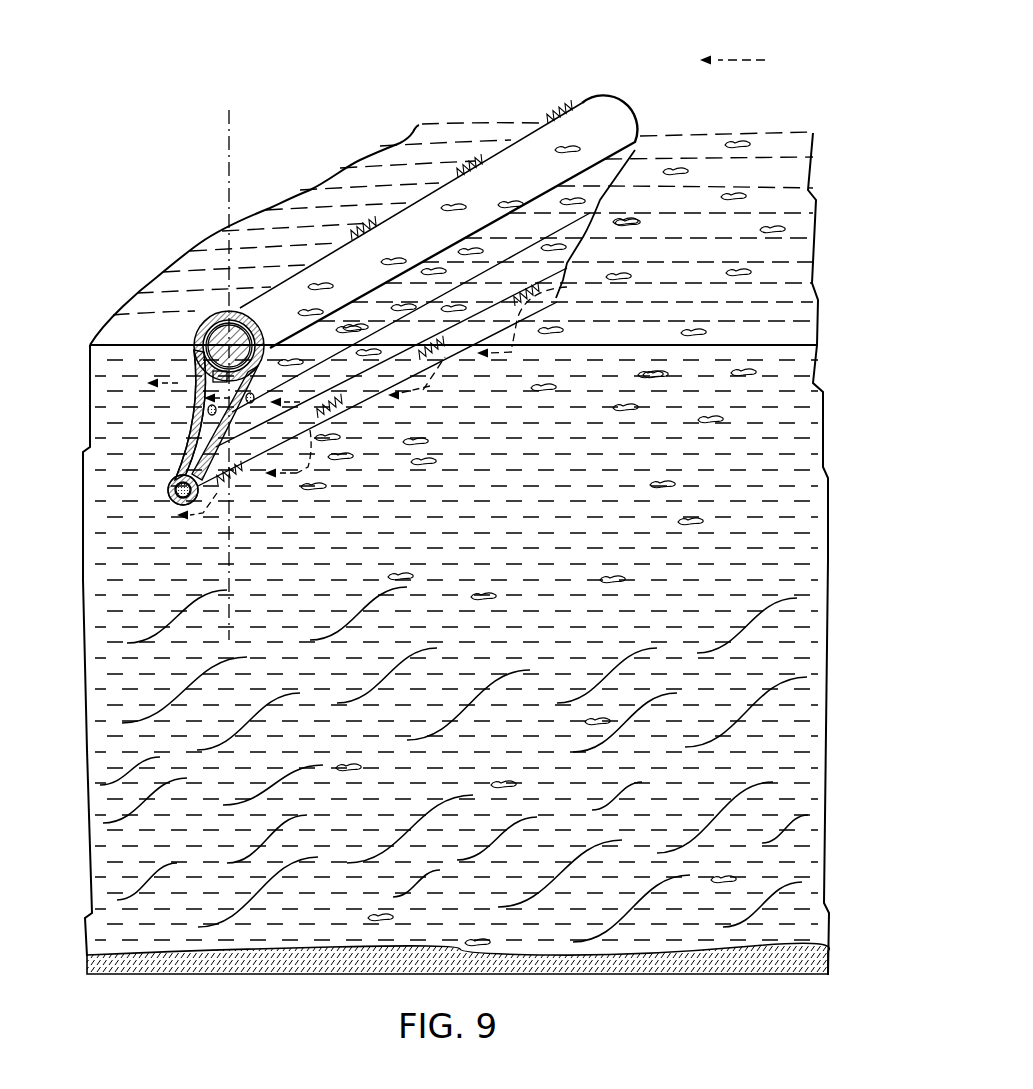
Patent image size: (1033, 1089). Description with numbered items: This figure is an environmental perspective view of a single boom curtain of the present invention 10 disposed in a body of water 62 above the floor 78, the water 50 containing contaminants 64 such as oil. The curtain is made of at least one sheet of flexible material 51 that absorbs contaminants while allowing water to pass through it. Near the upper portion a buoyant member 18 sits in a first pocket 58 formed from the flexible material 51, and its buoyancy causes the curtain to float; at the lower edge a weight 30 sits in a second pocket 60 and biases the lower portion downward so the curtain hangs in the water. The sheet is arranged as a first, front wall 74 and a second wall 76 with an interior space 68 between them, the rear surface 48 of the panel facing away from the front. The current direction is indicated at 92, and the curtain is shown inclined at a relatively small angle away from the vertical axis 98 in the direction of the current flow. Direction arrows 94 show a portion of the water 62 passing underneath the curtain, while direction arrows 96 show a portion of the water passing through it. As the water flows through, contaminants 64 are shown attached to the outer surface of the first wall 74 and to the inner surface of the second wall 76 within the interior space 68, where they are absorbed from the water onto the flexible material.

The present invention 10 is at (600, 76).
The buoyant member 18 is at (216, 320).
The weight 30 is at (168, 490).
The rear surface 48 is at (196, 398).
The water 50 is at (782, 345).
The sheet of flexible material 51 is at (222, 312).
The first pocket 58 is at (234, 312).
The second pocket 60 is at (172, 476).
The water 62 is at (792, 443).
The contaminants 64 is at (737, 143).
The interior space 68 is at (195, 358).
The first wall 74 is at (338, 418).
The second wall 76 is at (196, 412).
The floor 78 is at (100, 956).
The current direction 92 is at (737, 60).
The direction arrows 94 is at (440, 385).
The direction arrows 96 is at (178, 382).
The vertical axis 98 is at (232, 131).